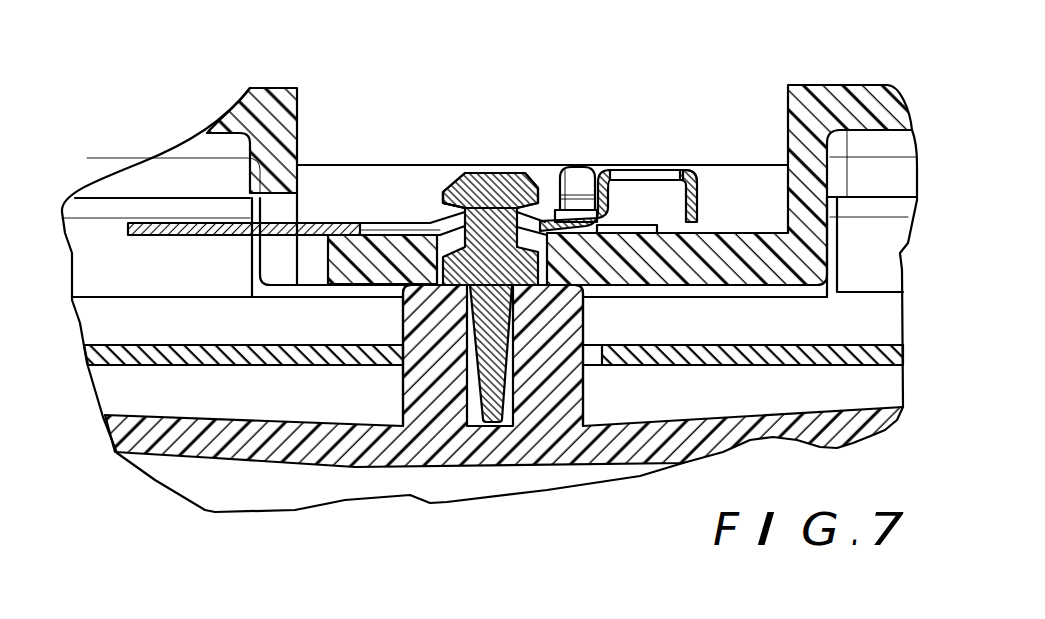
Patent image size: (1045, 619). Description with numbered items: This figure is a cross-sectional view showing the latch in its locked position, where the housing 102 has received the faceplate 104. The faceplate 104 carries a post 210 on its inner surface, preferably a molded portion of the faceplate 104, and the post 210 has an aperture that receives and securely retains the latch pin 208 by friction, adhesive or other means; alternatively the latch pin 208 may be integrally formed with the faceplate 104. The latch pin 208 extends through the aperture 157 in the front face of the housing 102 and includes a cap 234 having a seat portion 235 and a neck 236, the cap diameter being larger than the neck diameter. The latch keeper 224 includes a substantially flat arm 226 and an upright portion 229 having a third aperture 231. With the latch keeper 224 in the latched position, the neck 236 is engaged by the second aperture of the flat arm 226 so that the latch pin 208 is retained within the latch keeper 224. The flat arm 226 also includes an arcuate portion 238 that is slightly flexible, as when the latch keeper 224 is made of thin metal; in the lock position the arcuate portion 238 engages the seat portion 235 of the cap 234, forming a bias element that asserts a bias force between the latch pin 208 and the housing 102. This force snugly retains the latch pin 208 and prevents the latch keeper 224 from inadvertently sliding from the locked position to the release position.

The housing 102 is at (877, 92).
The faceplate 104 is at (218, 450).
The aperture 157 is at (388, 360).
The latch pin 208 is at (484, 176).
The post 210 is at (583, 397).
The latch keeper 224 is at (697, 200).
The substantially flat arm 226 is at (222, 237).
The upright portion 229 is at (677, 173).
The third aperture 231 is at (650, 175).
The cap 234 is at (456, 177).
The seat portion 235 is at (440, 210).
The neck 236 is at (440, 247).
The arcuate portion 238 is at (543, 210).